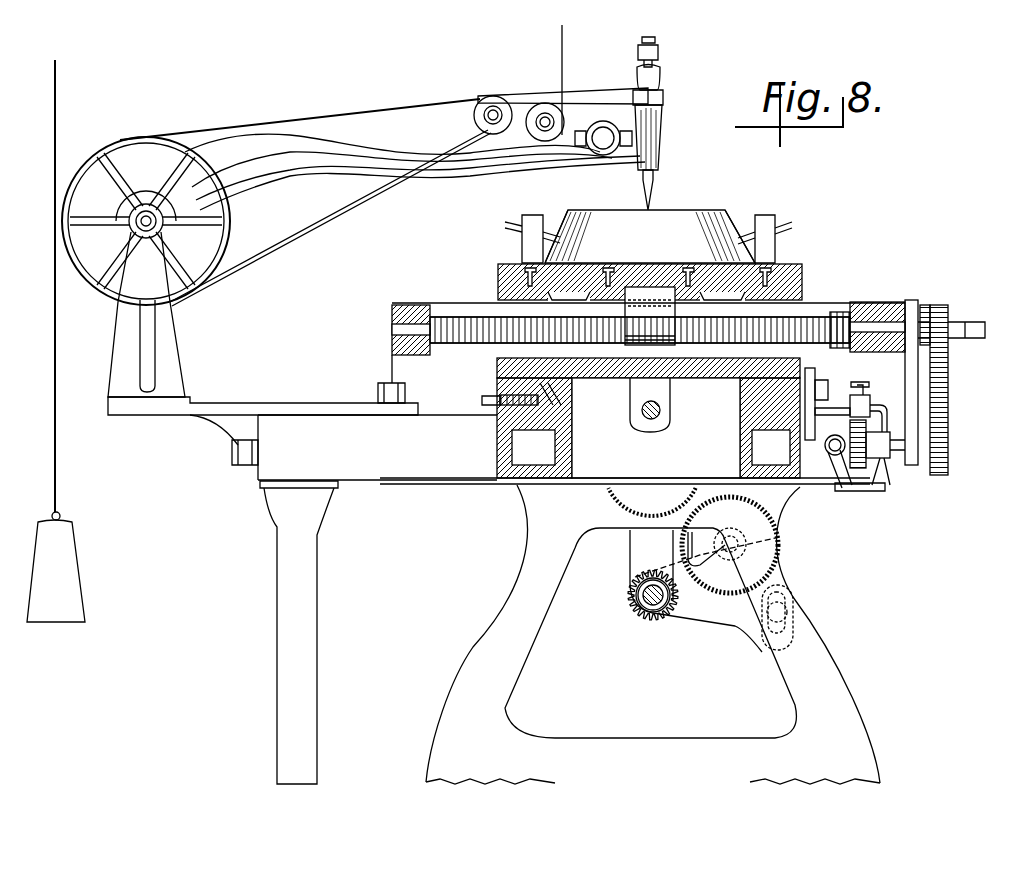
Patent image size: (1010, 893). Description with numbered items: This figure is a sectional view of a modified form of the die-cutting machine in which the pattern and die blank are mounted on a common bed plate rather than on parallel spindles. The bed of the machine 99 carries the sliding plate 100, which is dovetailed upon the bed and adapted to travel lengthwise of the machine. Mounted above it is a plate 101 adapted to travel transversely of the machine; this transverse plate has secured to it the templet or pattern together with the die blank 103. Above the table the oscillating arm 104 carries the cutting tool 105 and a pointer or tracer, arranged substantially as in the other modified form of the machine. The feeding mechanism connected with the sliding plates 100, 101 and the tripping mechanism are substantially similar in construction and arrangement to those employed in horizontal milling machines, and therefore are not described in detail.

The bed of the machine 99 is at (343, 447).
The sliding plate 100 is at (497, 372).
The plate 101 is at (843, 292).
The die blank 103 is at (648, 236).
The oscillating arm 104 is at (470, 160).
The cutting tool 105 is at (657, 195).